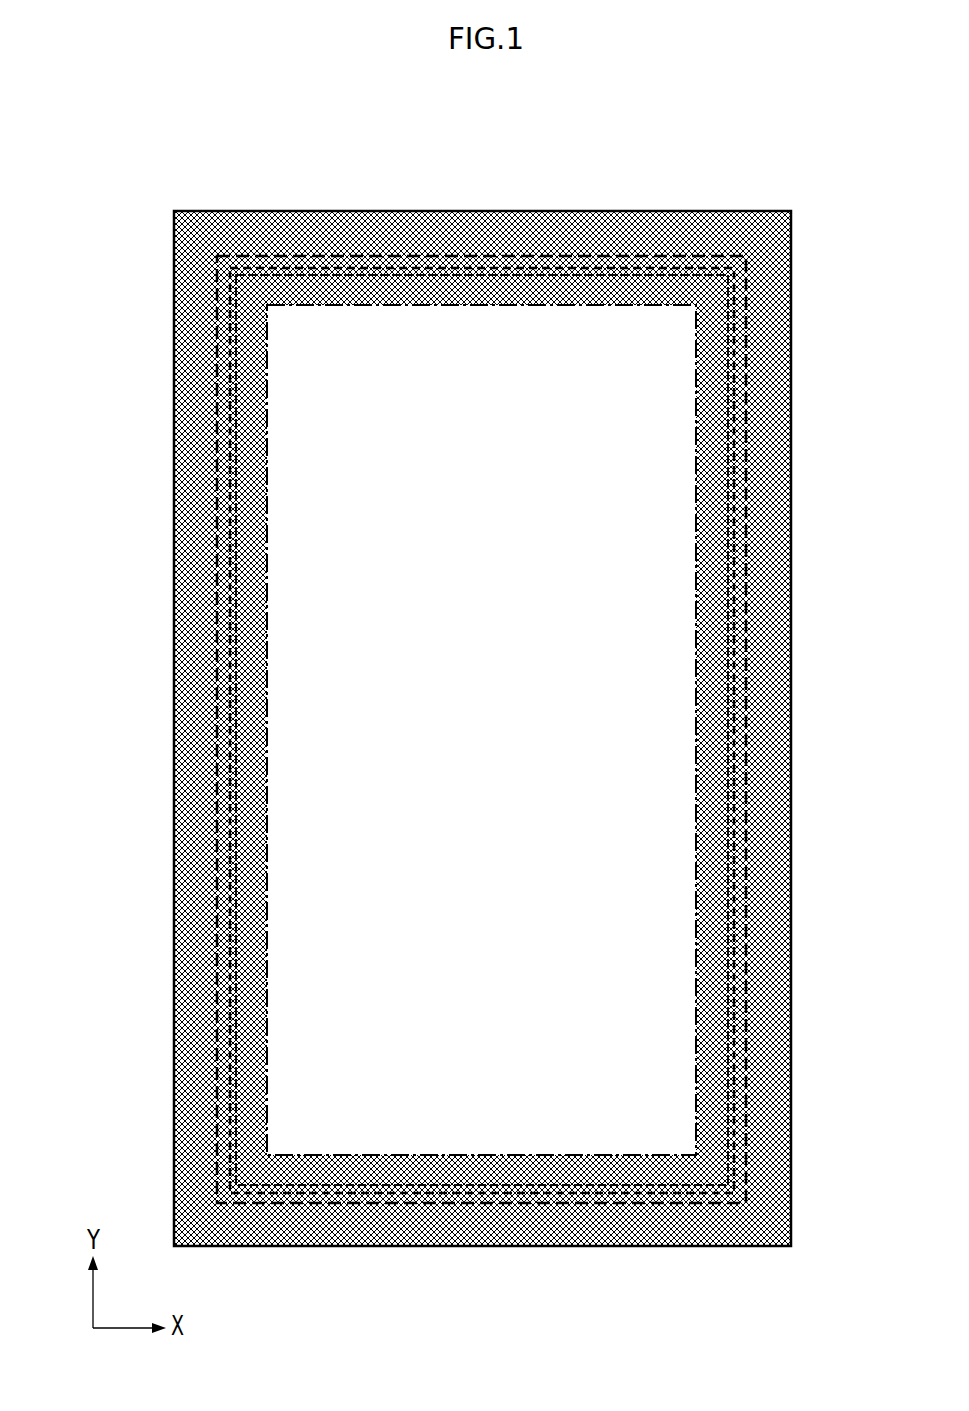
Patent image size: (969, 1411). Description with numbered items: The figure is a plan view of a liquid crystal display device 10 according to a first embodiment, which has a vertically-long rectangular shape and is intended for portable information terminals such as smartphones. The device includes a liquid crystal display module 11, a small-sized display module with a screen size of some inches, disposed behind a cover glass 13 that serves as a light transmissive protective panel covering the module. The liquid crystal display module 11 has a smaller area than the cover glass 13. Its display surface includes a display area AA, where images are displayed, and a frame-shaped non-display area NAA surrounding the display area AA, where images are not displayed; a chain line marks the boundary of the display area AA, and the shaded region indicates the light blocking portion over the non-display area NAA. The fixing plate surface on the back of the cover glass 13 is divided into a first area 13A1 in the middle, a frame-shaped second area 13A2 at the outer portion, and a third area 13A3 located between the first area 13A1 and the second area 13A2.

The liquid crystal display device 10 is at (134, 884).
The liquid crystal display module 11 is at (611, 265).
The cover glass 13 is at (166, 533).
The first area 13A1 is at (460, 267).
The second area 13A2 is at (336, 248).
The third area 13A3 is at (398, 260).
The display area AA is at (688, 405).
The non-display area NAA is at (195, 337).